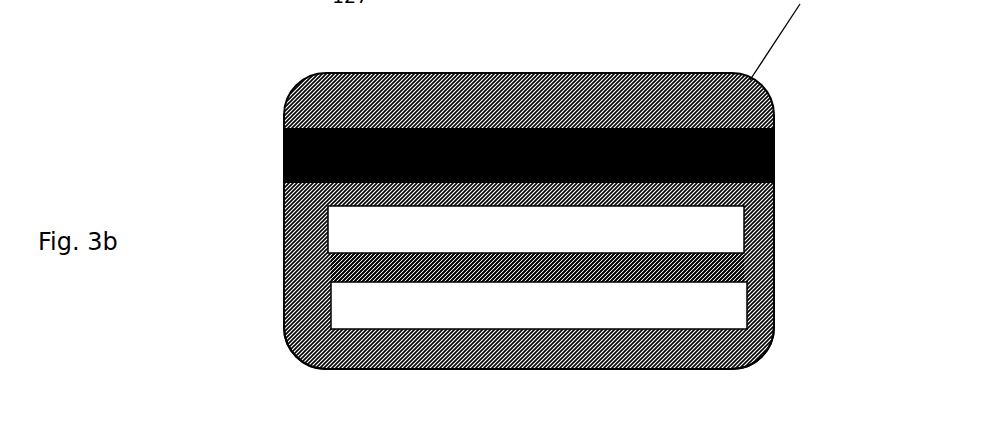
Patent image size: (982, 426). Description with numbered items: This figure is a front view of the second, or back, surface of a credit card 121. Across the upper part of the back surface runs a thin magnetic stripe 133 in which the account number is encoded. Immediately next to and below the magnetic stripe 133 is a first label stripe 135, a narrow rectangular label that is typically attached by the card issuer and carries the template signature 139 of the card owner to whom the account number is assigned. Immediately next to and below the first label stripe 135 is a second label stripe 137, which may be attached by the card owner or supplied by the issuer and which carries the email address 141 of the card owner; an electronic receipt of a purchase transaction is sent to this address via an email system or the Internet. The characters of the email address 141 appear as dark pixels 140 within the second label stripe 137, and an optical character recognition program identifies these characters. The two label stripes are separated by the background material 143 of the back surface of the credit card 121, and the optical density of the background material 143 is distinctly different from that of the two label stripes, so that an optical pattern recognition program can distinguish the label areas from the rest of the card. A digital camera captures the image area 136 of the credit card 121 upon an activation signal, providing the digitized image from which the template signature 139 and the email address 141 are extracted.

The credit card 121 is at (498, 209).
The magnetic stripe 133 is at (432, 128).
The first label stripe 135 is at (327, 233).
The image area 136 is at (773, 320).
The second label stripe 137 is at (293, 327).
The template signature 139 is at (433, 217).
The dark pixels 140 is at (453, 307).
The email address 141 is at (683, 307).
The background material 143 is at (753, 257).